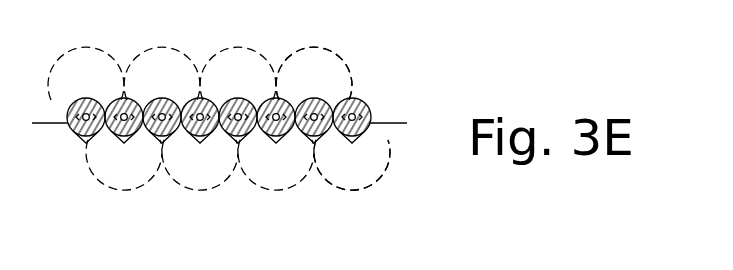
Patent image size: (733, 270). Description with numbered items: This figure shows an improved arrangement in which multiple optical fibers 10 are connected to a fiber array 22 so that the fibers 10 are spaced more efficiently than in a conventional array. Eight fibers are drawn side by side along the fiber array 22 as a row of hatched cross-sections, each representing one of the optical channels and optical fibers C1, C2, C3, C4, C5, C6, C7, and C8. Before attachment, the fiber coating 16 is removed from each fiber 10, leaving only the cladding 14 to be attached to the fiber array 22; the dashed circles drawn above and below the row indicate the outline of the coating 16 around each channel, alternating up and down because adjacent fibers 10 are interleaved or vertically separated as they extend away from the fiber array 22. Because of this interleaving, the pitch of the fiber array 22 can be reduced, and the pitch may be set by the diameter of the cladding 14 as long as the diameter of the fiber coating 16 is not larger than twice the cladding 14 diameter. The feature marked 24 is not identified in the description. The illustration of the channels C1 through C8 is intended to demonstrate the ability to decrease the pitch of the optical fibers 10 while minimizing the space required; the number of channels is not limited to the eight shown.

The optical fiber 10 is at (381, 180).
The cladding 14 is at (81, 103).
The fiber coating 16 is at (345, 63).
The fiber array 22 is at (393, 121).
The optical fiber 24 is at (80, 135).
The optical channel C1 is at (93, 100).
The optical channel C2 is at (122, 143).
The optical channel C3 is at (168, 100).
The optical channel C4 is at (197, 143).
The optical channel C5 is at (245, 100).
The optical channel C6 is at (275, 143).
The optical channel C7 is at (322, 100).
The optical channel C8 is at (351, 143).